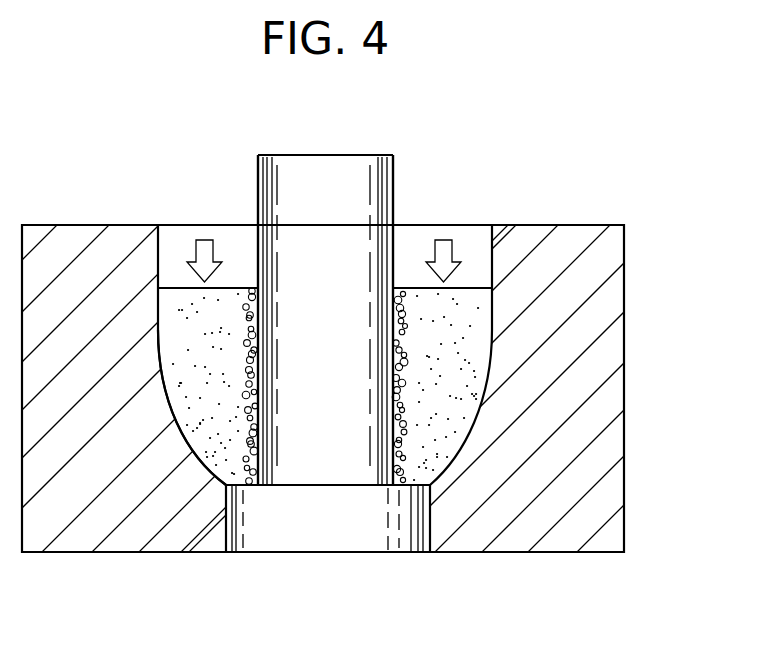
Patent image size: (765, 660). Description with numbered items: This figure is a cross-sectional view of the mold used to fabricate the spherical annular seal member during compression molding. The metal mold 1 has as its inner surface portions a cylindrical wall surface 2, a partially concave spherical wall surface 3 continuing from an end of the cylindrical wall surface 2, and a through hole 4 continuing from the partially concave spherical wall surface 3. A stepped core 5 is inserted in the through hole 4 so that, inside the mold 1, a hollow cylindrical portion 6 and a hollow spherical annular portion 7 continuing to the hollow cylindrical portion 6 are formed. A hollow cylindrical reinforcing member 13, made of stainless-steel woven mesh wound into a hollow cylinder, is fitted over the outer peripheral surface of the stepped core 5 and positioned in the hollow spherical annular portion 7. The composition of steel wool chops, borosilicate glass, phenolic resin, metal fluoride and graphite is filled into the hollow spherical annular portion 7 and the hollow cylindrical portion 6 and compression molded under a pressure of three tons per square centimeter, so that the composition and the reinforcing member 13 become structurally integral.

The metal mold 1 is at (639, 251).
The cylindrical wall surface 2 is at (491, 259).
The partially concave spherical wall surface 3 is at (488, 380).
The through hole 4 is at (432, 513).
The stepped core 5 is at (303, 520).
The hollow cylindrical portion 6 is at (174, 258).
The hollow spherical annular portion 7 is at (212, 440).
The hollow cylindrical reinforcing member 13 is at (237, 292).